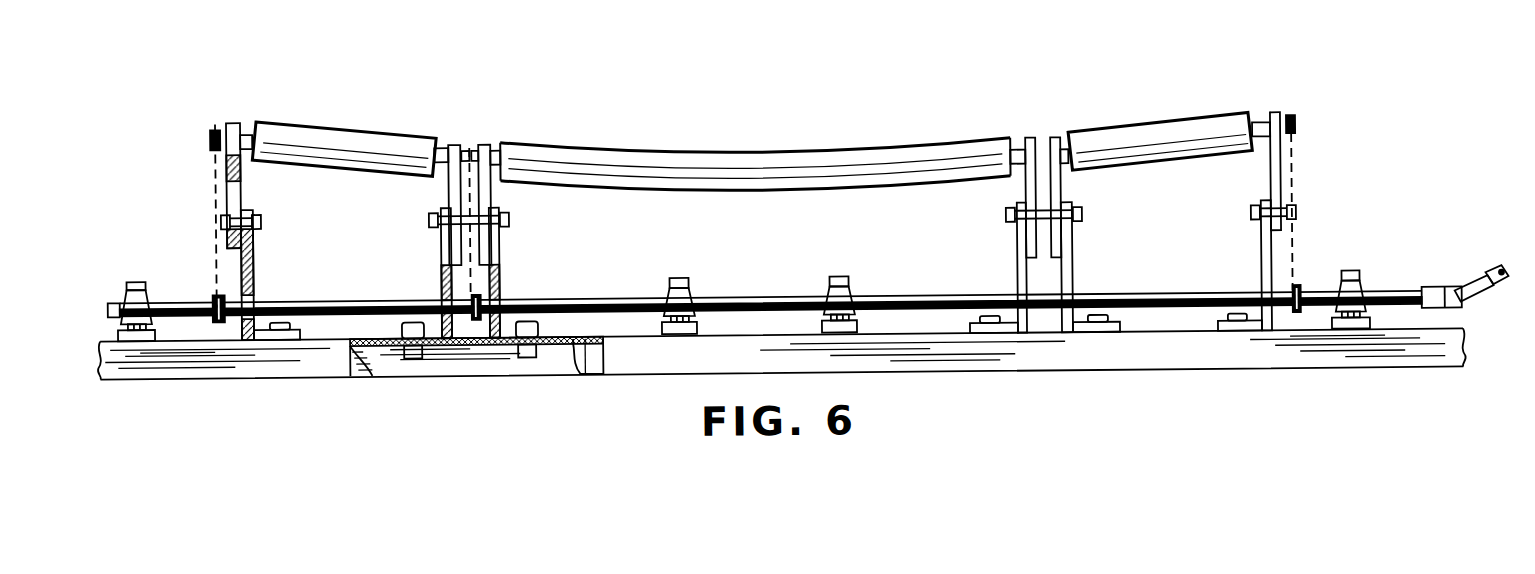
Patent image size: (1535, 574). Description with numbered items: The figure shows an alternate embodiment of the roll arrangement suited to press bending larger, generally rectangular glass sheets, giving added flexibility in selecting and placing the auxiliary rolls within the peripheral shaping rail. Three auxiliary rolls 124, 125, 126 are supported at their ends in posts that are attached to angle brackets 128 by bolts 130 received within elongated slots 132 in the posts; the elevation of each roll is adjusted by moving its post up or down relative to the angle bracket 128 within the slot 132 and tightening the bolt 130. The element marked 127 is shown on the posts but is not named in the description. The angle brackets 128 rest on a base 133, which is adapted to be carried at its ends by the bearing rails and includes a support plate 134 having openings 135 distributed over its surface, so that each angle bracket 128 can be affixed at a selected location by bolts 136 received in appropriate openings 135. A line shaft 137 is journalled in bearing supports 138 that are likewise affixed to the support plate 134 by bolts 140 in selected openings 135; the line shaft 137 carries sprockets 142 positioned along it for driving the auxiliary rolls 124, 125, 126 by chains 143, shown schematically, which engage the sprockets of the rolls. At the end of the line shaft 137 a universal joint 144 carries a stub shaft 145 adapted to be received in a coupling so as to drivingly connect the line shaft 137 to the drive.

The auxiliary roll 124 is at (365, 138).
The auxiliary roll 125 is at (805, 160).
The auxiliary roll 126 is at (1152, 135).
The roller support plate 127 is at (228, 166).
The angle bracket 128 is at (255, 275).
The bolt 130 is at (262, 217).
The elongated slot 132 is at (238, 188).
The base 133 is at (1250, 365).
The support plate 134 is at (370, 349).
The opening 135 is at (575, 348).
The bolt 136 is at (415, 346).
The line shaft 137 is at (617, 297).
The bearing support 138 is at (683, 277).
The bolt 140 is at (823, 322).
The sprocket 142 is at (215, 291).
The chain 143 is at (217, 192).
The universal joint 144 is at (1432, 290).
The stub shaft 145 is at (1500, 280).